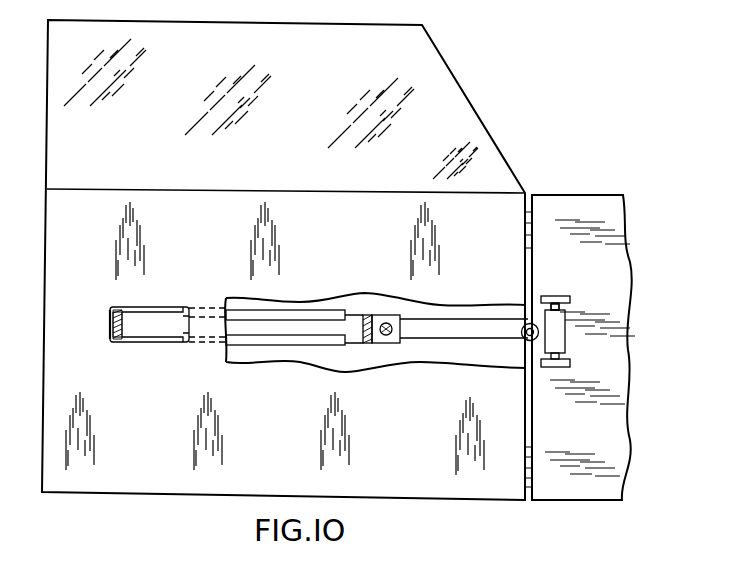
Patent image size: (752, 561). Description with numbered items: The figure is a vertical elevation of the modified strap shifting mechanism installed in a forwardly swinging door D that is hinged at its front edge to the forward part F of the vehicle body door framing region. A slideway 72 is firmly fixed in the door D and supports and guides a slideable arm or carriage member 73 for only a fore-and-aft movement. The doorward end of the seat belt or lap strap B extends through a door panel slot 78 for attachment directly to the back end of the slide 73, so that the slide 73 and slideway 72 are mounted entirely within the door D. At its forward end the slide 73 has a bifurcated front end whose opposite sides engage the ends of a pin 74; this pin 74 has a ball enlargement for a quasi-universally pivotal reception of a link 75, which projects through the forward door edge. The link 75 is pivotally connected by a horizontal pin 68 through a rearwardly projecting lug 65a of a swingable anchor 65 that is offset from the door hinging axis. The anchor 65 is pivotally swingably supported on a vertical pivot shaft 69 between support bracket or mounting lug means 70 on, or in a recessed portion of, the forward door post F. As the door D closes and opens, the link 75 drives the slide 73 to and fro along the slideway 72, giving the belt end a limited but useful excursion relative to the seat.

The door D is at (41, 359).
The forward part of the vehicle body door framing region F is at (565, 195).
The slideway 72 is at (268, 314).
The slideable arm or carriage member 73 is at (160, 322).
The door panel slot 78 is at (110, 321).
The seat belt or lap strap B is at (121, 338).
The pin 74 is at (390, 322).
The link 75 is at (455, 339).
The horizontal pin 68 is at (524, 343).
The swingable anchor 65 is at (566, 332).
The rearwardly projecting lug 65a is at (545, 319).
The vertical pivot shaft 69 is at (566, 308).
The support bracket or mounting lug means 70 is at (571, 300).